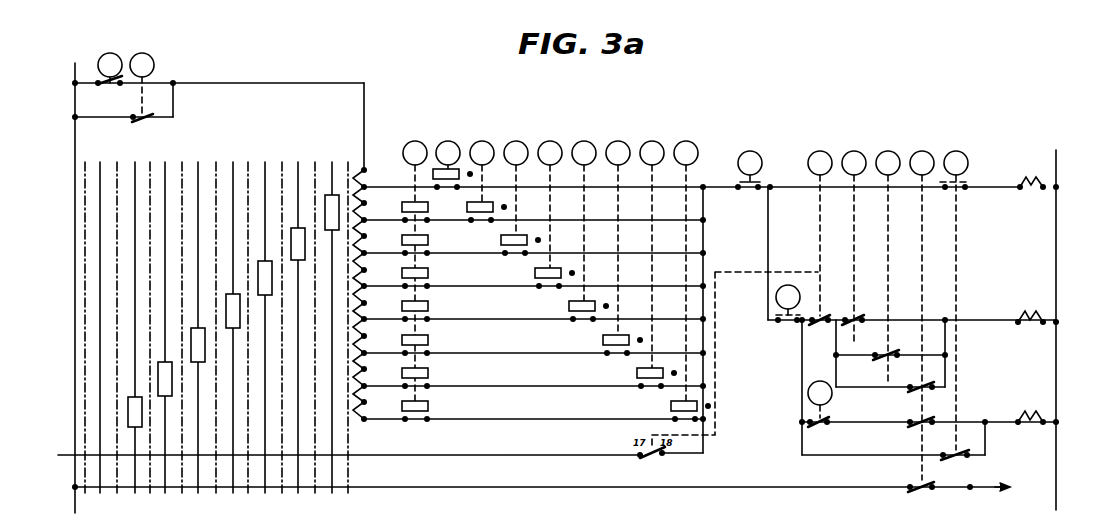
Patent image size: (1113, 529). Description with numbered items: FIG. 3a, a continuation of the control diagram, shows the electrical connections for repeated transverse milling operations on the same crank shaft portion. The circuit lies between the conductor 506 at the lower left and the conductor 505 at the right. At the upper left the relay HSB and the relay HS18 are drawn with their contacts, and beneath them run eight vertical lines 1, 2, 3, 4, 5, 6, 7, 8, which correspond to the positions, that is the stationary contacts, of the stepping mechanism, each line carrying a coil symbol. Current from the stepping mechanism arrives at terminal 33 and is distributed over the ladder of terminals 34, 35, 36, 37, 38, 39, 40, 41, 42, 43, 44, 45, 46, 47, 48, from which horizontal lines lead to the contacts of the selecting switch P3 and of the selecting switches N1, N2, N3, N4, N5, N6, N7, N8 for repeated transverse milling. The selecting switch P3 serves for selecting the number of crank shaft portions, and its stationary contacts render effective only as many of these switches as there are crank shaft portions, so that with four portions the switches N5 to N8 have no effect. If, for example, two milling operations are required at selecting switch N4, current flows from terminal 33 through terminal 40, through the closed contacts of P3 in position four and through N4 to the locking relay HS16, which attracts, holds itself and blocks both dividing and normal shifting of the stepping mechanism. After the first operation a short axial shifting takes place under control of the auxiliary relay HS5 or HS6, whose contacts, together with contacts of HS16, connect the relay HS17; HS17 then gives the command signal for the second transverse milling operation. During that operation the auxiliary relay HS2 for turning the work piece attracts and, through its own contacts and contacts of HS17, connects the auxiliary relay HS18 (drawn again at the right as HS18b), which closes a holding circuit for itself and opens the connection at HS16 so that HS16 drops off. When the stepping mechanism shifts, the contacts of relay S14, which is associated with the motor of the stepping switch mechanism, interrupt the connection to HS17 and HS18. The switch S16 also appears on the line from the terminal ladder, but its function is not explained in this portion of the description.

The right supply bus 505 is at (1056, 470).
The left supply bus 506 is at (75, 506).
The stepping mechanism position 1 is at (371, 126).
The stepping mechanism position 2 is at (332, 316).
The stepping mechanism position 3 is at (298, 316).
The stepping mechanism position 4 is at (264, 316).
The stepping mechanism position 5 is at (232, 316).
The stepping mechanism position 6 is at (198, 316).
The stepping mechanism position 7 is at (165, 316).
The stepping mechanism position 8 is at (135, 316).
The terminal 33 is at (372, 165).
The ladder terminal 34 is at (690, 182).
The ladder terminal 35 is at (372, 198).
The ladder terminal 36 is at (532, 215).
The ladder terminal 37 is at (372, 231).
The ladder terminal 38 is at (532, 248).
The ladder terminal 39 is at (372, 265).
The terminal 40 is at (532, 281).
The ladder terminal 41 is at (372, 298).
The ladder terminal 42 is at (532, 314).
The ladder terminal 43 is at (372, 331).
The ladder terminal 44 is at (532, 348).
The ladder terminal 45 is at (372, 364).
The ladder terminal 46 is at (532, 381).
The ladder terminal 47 is at (372, 397).
The ladder terminal 48 is at (532, 414).
The relay HSB is at (110, 54).
The auxiliary relay HS18 is at (146, 54).
The auxiliary relay HS18b is at (957, 151).
The selecting switch P3 is at (411, 141).
The selecting switch N1 is at (450, 143).
The selecting switch N2 is at (484, 141).
The selecting switch N3 is at (518, 143).
The selecting switch N4 is at (552, 141).
The selecting switch N5 is at (586, 143).
The selecting switch N6 is at (620, 141).
The selecting switch N7 is at (654, 143).
The selecting switch N8 is at (688, 141).
The switch S16 is at (750, 150).
The relay S14 is at (793, 284).
The locking relay HS16 is at (818, 151).
The auxiliary relay HS5 is at (855, 152).
The auxiliary relay HS6 is at (890, 145).
The relay HS17 is at (923, 153).
The auxiliary relay HS2 is at (804, 392).